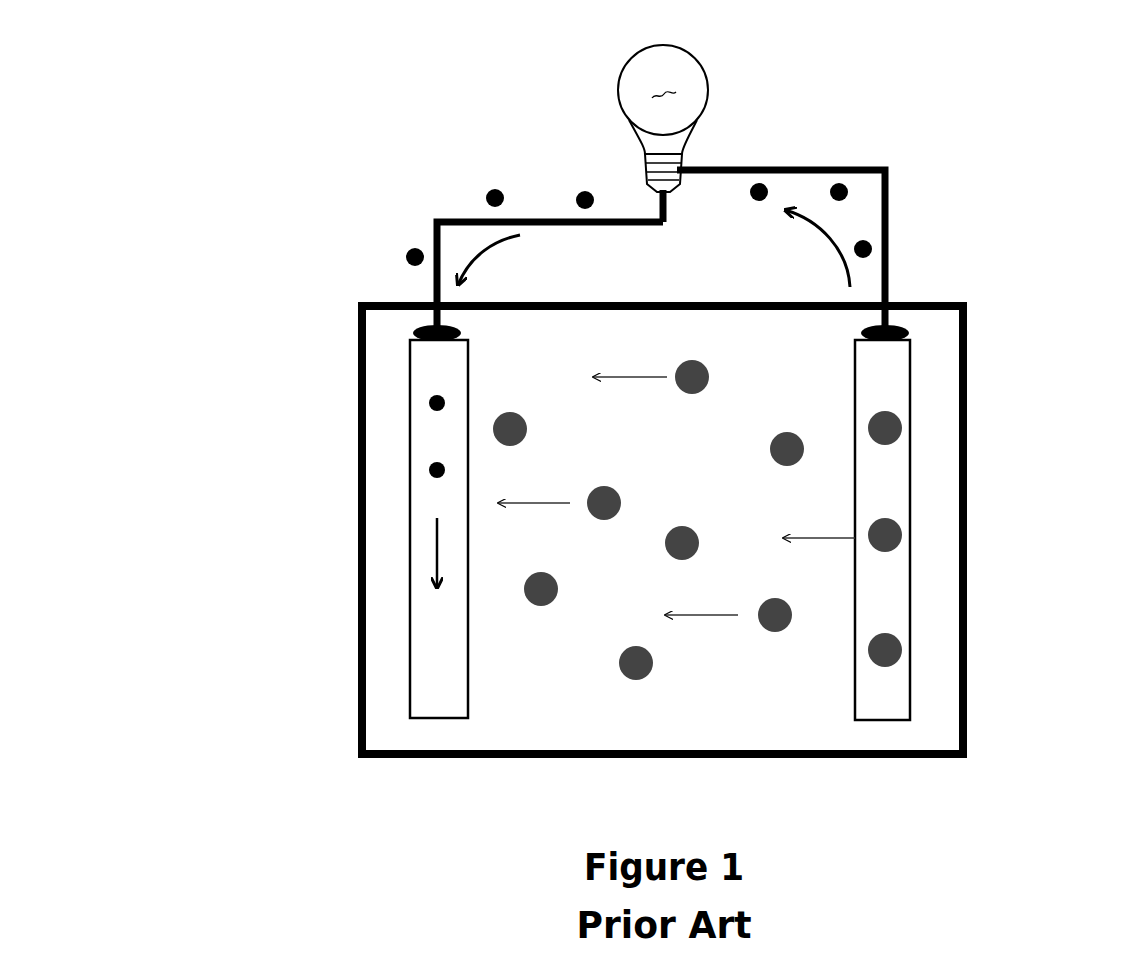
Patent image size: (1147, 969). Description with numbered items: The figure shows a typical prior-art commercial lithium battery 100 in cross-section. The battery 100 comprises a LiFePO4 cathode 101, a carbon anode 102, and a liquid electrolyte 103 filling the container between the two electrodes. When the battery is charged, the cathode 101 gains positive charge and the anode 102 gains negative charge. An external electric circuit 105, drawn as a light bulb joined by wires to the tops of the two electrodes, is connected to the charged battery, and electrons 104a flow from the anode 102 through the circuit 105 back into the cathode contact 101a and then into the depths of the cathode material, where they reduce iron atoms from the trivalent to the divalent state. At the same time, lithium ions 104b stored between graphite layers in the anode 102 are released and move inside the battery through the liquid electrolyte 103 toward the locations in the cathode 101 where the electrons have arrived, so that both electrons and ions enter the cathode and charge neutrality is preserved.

The battery 100 is at (392, 290).
The LiFePO4 cathode 101 is at (405, 643).
The cathode contact 101a is at (397, 331).
The carbon anode 102 is at (920, 610).
The liquid electrolyte 103 is at (566, 715).
The electrons 104a is at (870, 195).
The lithium ions 104b is at (675, 676).
The electric circuit 105 is at (752, 127).